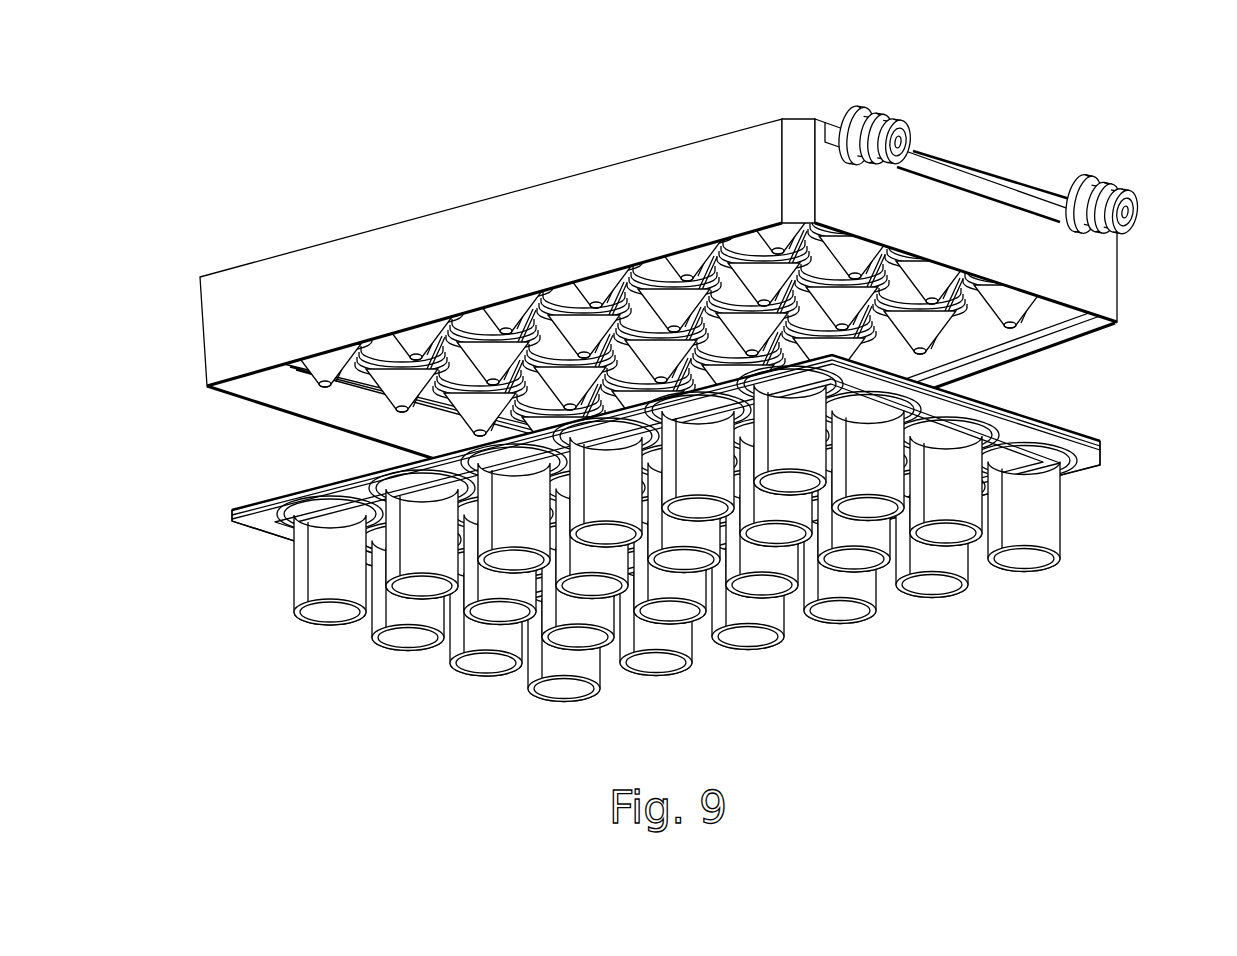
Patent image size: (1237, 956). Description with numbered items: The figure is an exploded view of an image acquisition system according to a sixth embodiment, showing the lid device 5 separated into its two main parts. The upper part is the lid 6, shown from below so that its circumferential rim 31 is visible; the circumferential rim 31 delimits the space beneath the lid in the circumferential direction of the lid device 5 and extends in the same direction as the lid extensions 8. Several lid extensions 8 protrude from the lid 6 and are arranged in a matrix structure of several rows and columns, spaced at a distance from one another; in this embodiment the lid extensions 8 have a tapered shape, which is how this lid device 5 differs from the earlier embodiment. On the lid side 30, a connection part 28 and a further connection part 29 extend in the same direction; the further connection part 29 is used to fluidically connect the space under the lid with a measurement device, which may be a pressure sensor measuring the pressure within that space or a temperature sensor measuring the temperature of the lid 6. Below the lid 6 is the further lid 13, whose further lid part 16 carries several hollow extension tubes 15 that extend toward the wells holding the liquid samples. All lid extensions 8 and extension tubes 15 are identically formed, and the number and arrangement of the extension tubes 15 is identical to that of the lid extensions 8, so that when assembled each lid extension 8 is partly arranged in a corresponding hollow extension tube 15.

The lid device 5 is at (703, 369).
The lid 6 is at (298, 226).
The lid extension 8 is at (400, 402).
The further lid 13 is at (682, 484).
The hollow extension tube 15 is at (320, 575).
The further lid part 16 is at (1052, 420).
The connection part 28 is at (1085, 206).
The further connection part 29 is at (862, 134).
The lid side 30 is at (940, 197).
The circumferential rim 31 is at (282, 390).